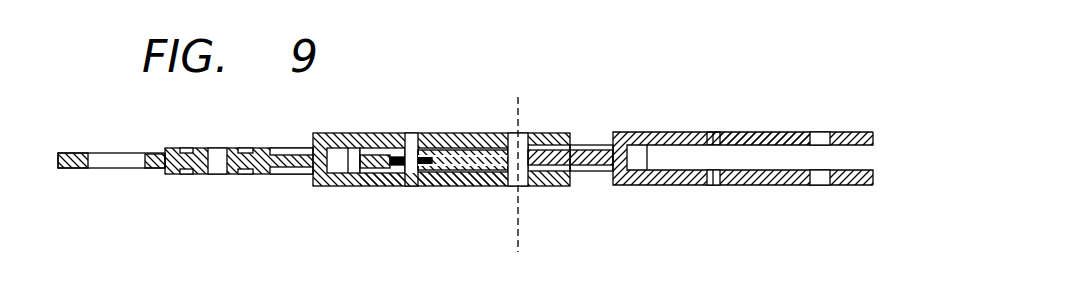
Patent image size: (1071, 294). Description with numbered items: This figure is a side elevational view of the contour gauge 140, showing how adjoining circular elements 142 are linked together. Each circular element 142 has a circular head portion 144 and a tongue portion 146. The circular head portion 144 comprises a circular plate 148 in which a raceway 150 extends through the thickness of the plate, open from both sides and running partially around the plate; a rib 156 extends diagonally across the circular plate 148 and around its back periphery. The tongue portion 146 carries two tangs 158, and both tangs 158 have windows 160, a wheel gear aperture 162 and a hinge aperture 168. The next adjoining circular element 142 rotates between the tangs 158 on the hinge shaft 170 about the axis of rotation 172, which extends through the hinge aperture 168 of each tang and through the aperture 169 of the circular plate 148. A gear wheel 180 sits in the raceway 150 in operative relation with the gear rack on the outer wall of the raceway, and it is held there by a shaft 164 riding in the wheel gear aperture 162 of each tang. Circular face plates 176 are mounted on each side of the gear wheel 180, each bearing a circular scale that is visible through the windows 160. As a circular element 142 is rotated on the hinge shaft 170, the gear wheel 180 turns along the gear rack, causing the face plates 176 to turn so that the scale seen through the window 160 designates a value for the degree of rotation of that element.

The contour gauge 140 is at (540, 100).
The circular element 142 is at (322, 133).
The circular head portion 144 is at (587, 172).
The tongue portion 146 is at (738, 132).
The circular plate 148 is at (487, 133).
The raceway 150 is at (93, 158).
The rib 156 is at (263, 174).
The tangs 158 is at (848, 132).
The windows 160 is at (390, 186).
The wheel gear aperture 162 is at (715, 185).
The shaft 164 is at (412, 133).
The hinge aperture 168 is at (827, 185).
The aperture 169 is at (212, 147).
The hinge shaft 170 is at (525, 133).
The axis of rotation 172 is at (520, 213).
The circular face plates 176 is at (432, 187).
The gear wheel 180 is at (442, 133).